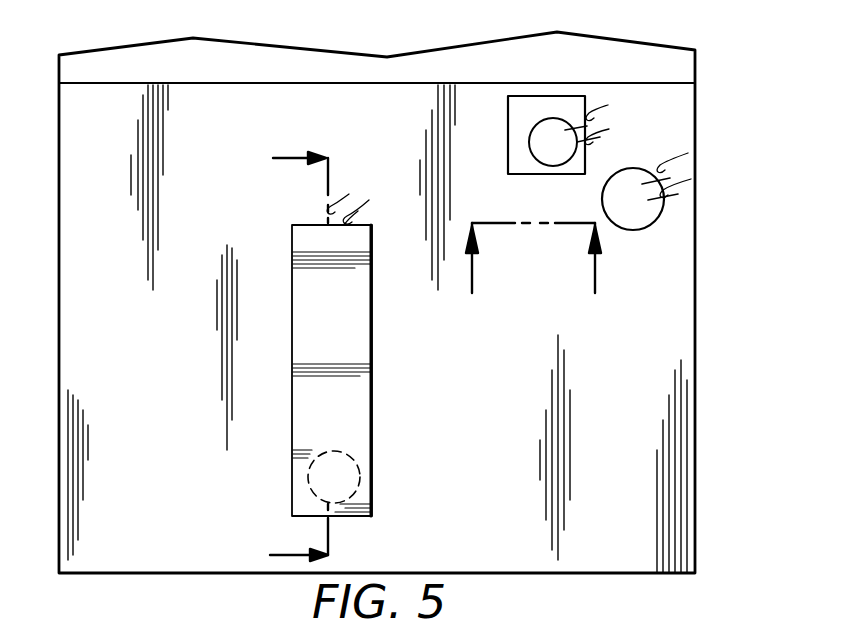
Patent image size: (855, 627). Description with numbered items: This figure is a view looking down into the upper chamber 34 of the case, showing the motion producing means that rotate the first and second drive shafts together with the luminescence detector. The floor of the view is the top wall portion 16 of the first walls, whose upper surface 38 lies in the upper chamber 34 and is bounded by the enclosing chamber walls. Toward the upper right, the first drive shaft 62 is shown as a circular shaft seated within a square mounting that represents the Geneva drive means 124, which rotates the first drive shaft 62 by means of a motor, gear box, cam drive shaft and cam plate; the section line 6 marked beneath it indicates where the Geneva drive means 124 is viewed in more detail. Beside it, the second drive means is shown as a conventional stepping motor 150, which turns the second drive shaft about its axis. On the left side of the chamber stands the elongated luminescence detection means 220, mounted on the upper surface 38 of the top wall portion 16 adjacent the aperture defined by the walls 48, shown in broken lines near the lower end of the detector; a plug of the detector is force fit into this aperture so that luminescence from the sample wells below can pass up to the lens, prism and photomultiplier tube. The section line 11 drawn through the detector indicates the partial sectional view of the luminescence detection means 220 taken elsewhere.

The upper chamber 34 is at (651, 321).
The luminescence detection means 220 is at (366, 343).
The walls defining aperture 48 is at (355, 460).
The section line 11- 11 is at (299, 356).
The section line 6- 6 is at (543, 258).
The Geneva drive means 124 is at (590, 90).
The first drive shaft 62 is at (550, 118).
The stepping motor 150 is at (637, 168).
The top wall portion 16 is at (479, 453).
The upper surface 38 is at (158, 498).